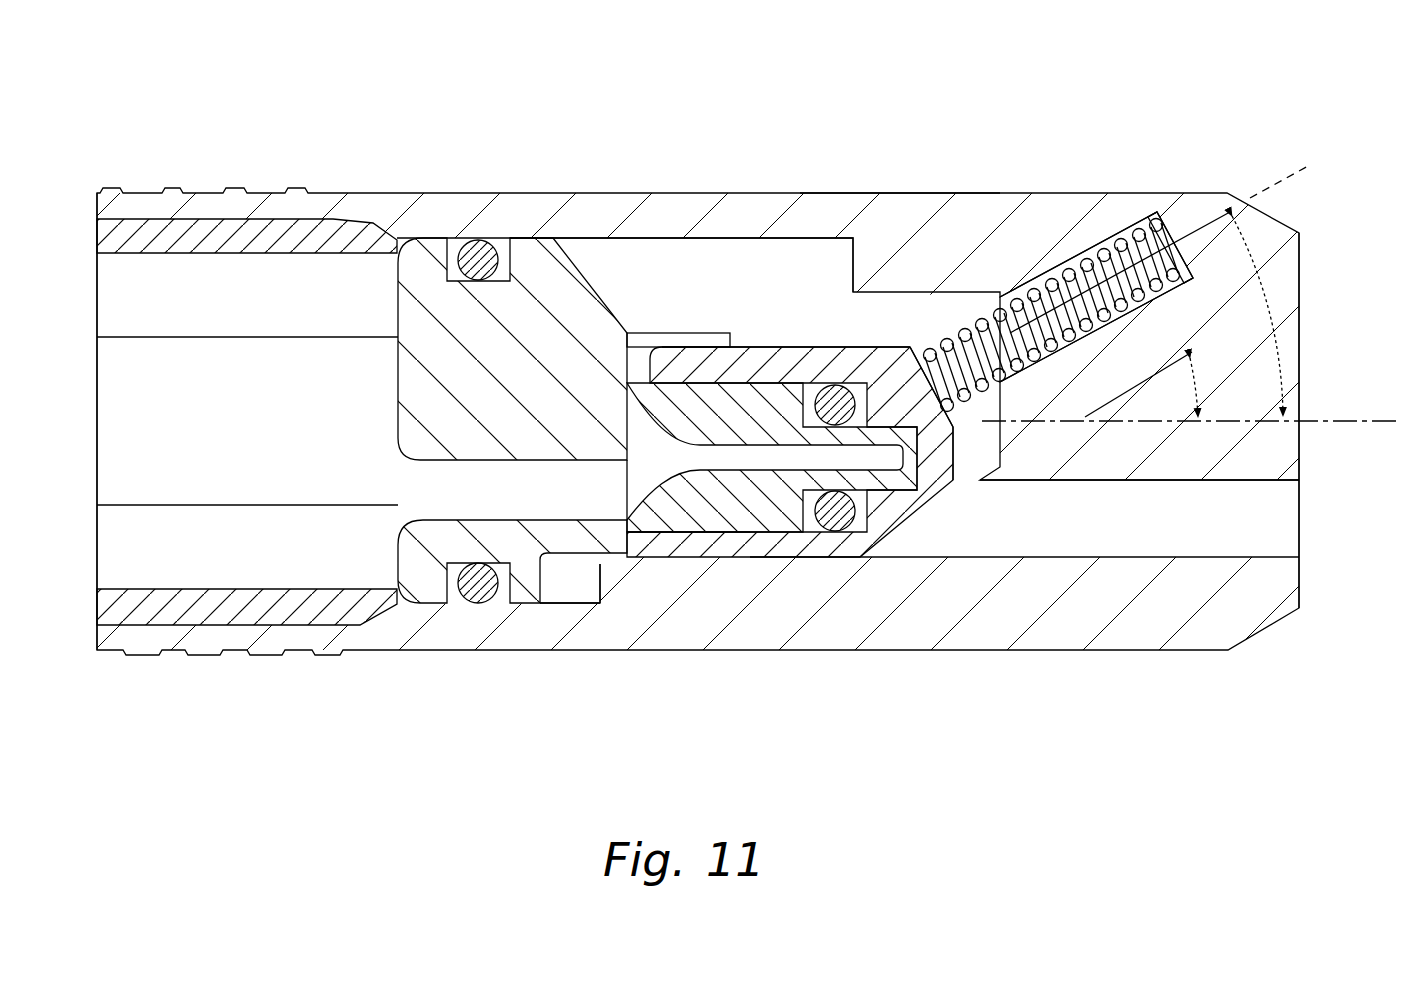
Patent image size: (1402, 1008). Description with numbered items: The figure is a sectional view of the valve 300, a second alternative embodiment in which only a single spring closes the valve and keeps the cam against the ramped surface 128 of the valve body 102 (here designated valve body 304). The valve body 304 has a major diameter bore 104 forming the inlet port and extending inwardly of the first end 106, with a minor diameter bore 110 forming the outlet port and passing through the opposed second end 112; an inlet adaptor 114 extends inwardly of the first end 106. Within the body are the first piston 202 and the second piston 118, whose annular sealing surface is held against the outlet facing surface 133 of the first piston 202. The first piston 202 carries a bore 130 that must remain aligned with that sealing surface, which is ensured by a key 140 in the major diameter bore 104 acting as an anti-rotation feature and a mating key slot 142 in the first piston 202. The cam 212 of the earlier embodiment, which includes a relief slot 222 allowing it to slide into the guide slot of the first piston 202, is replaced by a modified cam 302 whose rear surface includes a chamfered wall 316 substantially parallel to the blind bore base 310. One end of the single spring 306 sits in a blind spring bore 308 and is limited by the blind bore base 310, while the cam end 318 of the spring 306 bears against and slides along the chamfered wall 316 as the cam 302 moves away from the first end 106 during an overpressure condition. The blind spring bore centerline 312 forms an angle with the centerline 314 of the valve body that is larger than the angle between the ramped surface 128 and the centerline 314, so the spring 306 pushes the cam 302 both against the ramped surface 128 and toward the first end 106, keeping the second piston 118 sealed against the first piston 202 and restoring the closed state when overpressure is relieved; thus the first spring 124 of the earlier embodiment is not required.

The valve 300 is at (113, 58).
The valve body 102 is at (981, 189).
The major diameter bore 104 is at (783, 247).
The first end 106 is at (96, 202).
The minor diameter bore 110 is at (1152, 534).
The second end 112 is at (1301, 331).
The inlet adaptor 114 is at (204, 227).
The second piston 118 is at (713, 535).
The first spring 124 is at (1107, 343).
The ramped surface 128 is at (942, 478).
The bore 130 is at (512, 506).
The outlet facing surface 133 is at (634, 344).
The key 140 is at (618, 578).
The key slot 142 is at (563, 578).
The first piston 202 is at (551, 240).
The cam 212 is at (781, 555).
The relief slot 222 is at (661, 548).
The cam 302 is at (895, 508).
The valve body 304 is at (886, 192).
The spring 306 is at (1181, 198).
The blind spring bore 308 is at (1071, 262).
The blind bore base 310 is at (1158, 296).
The blind spring bore centerline 312 is at (1272, 184).
The centerline 314 is at (1338, 419).
The chamfered wall 316 is at (903, 372).
The cam end 318 is at (910, 356).